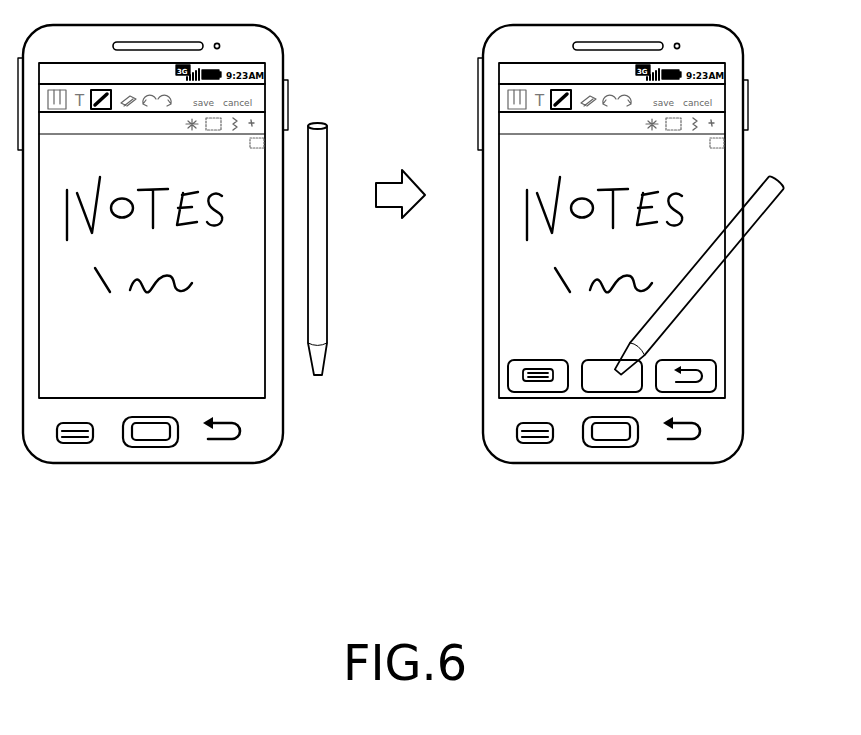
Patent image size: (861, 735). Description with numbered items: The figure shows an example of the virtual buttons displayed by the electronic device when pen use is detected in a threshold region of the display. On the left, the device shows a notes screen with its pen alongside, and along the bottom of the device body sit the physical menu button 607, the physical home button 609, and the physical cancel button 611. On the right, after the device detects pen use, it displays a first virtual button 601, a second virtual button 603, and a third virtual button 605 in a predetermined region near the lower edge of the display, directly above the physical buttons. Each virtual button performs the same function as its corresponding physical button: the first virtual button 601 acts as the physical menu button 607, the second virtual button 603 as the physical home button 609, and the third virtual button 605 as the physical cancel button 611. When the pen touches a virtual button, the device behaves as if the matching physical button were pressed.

The first virtual button 601 is at (517, 377).
The second virtual button 603 is at (593, 362).
The third virtual button 605 is at (707, 372).
The physical menu button 607 is at (533, 445).
The physical home button 609 is at (610, 445).
The physical cancel button 611 is at (682, 442).